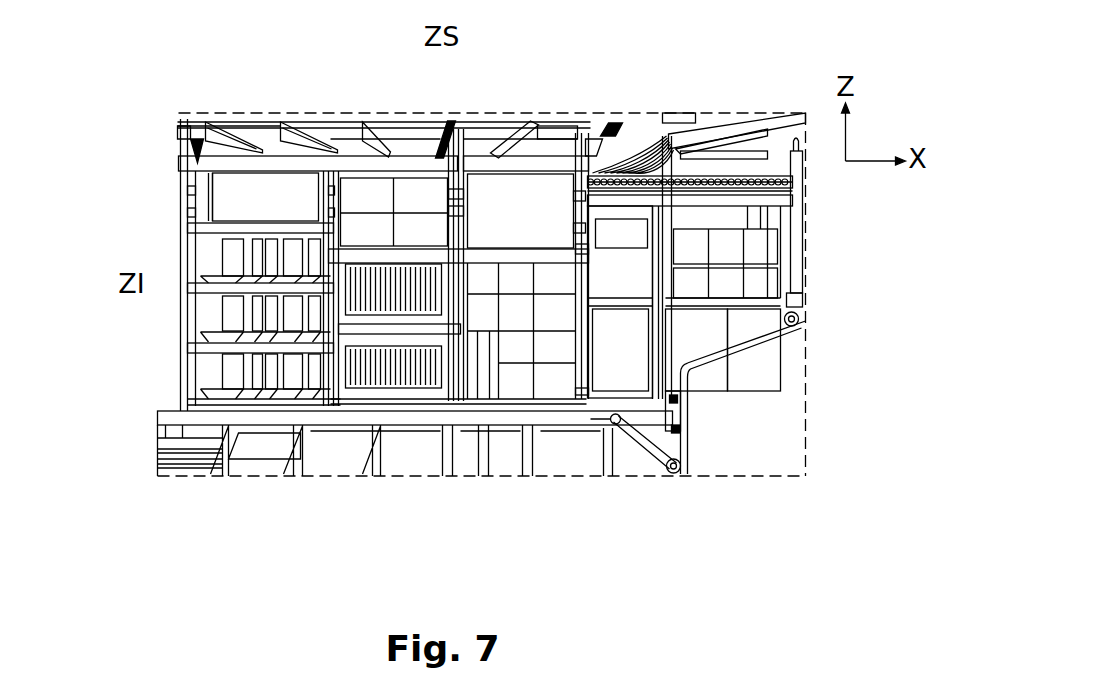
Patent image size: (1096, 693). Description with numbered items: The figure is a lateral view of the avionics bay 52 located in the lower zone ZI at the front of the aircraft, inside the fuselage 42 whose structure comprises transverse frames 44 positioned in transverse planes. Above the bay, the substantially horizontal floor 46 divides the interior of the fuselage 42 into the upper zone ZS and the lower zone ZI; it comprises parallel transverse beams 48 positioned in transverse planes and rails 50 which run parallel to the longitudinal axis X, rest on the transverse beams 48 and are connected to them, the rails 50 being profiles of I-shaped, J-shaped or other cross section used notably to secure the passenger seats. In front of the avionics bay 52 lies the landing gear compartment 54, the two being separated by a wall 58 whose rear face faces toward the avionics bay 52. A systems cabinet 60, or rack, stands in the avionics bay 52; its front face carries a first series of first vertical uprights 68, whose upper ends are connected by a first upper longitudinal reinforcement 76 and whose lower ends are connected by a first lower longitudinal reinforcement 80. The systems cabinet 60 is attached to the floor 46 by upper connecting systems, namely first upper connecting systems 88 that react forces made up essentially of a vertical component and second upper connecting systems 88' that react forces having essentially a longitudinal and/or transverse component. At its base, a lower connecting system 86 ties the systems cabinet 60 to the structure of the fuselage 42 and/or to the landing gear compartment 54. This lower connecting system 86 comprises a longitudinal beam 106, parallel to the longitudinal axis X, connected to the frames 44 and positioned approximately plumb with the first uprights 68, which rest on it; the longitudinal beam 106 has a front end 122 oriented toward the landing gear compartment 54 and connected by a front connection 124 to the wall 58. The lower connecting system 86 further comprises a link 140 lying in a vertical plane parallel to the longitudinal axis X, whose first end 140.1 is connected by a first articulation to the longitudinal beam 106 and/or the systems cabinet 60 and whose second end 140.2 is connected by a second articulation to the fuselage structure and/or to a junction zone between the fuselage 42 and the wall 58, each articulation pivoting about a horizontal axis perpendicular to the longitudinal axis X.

The fuselage 42 is at (155, 457).
The frames 44 is at (228, 482).
The floor 46 is at (386, 105).
The transverse beams 48 is at (288, 107).
The rails 50 is at (507, 106).
The avionics bay 52 is at (142, 238).
The landing gear compartment 54 is at (758, 465).
The wall 58 is at (700, 410).
The systems cabinet 60 is at (236, 128).
The first vertical uprights 68 is at (348, 226).
The first upper longitudinal reinforcement 76 is at (186, 113).
The first lower longitudinal reinforcement 80 is at (405, 415).
The lower connecting system 86 is at (150, 410).
The first upper connecting systems 88 is at (456, 102).
The second upper connecting systems 88' is at (686, 81).
The longitudinal beam 106 is at (483, 432).
The front end 122 is at (690, 428).
The front connection 124 is at (684, 350).
The link 140 is at (638, 462).
The first end 140.1 is at (687, 456).
The second end 140.2 is at (612, 418).